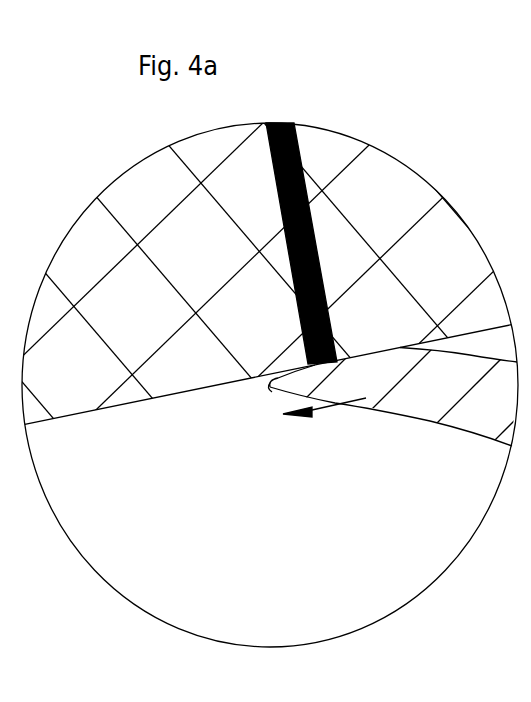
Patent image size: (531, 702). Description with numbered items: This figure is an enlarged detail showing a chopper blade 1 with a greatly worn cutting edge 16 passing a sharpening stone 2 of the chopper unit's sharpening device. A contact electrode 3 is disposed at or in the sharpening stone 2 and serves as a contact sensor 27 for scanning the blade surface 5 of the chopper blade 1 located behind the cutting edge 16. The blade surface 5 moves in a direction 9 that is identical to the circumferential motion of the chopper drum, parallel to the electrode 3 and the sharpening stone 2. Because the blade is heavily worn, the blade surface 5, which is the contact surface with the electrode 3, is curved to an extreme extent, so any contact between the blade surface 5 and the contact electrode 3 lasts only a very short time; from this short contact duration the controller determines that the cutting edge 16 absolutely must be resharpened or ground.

The chopper blade 1 is at (412, 402).
The sharpening stone 2 is at (185, 375).
The contact electrode 3 is at (301, 193).
The contact sensor 27 is at (275, 122).
The blade surface 5 is at (296, 371).
The direction of movement of the blade surface 9 is at (333, 403).
The cutting edge 16 is at (270, 389).